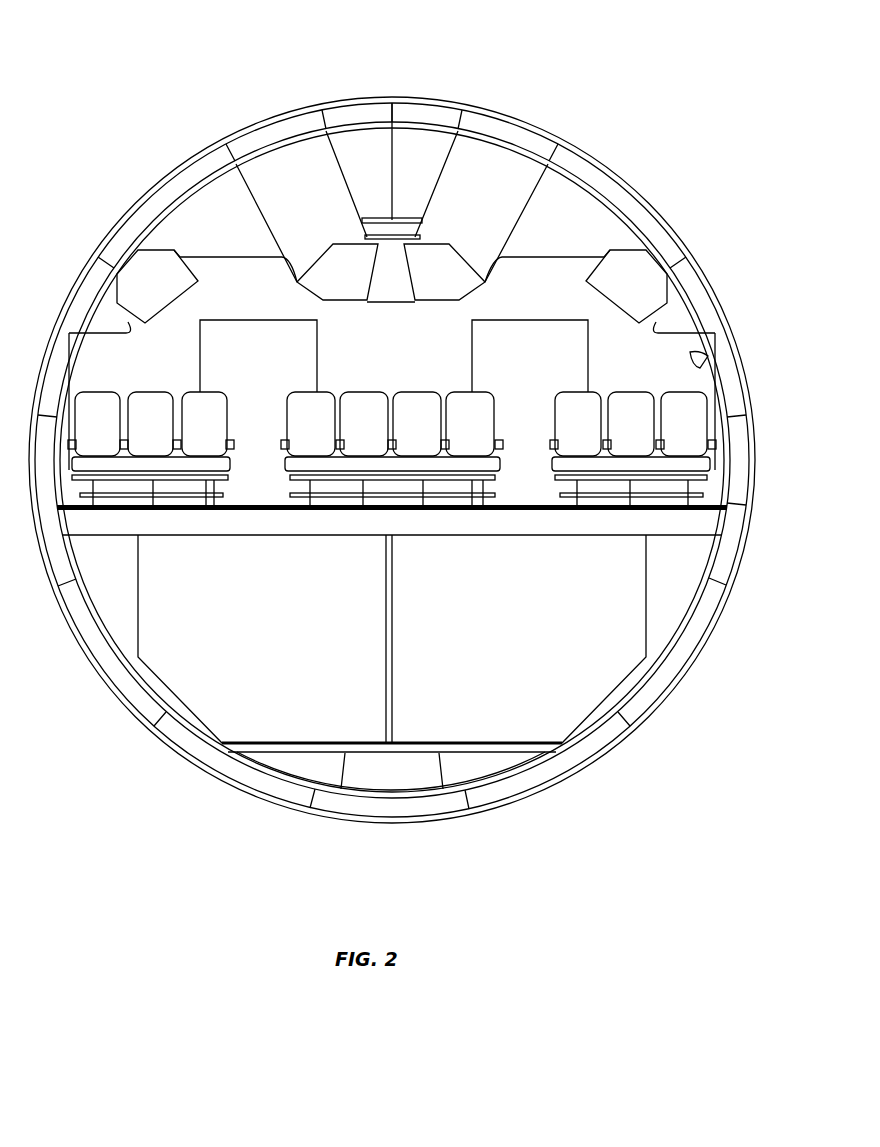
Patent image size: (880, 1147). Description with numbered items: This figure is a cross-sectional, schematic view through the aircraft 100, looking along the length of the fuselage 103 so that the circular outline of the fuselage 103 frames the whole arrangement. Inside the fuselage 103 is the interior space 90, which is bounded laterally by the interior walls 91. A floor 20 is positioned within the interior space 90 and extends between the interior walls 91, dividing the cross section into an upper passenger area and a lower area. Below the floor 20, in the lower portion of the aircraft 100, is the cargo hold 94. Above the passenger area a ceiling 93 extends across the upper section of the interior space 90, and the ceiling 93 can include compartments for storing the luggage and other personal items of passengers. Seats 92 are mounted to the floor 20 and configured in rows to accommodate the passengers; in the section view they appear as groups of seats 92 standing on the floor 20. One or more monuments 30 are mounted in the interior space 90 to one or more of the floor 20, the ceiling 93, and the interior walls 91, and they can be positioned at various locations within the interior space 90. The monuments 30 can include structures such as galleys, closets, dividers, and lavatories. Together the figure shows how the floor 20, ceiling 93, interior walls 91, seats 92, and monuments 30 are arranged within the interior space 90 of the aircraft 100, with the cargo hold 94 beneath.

The aircraft 100 is at (100, 90).
The fuselage 103 is at (622, 180).
The ceiling 93 is at (183, 254).
The monument 30 is at (185, 355).
The interior space 90 is at (640, 362).
The interior wall 91 is at (700, 358).
The seat 92 is at (150, 405).
The floor 20 is at (698, 520).
The cargo hold 94 is at (668, 585).